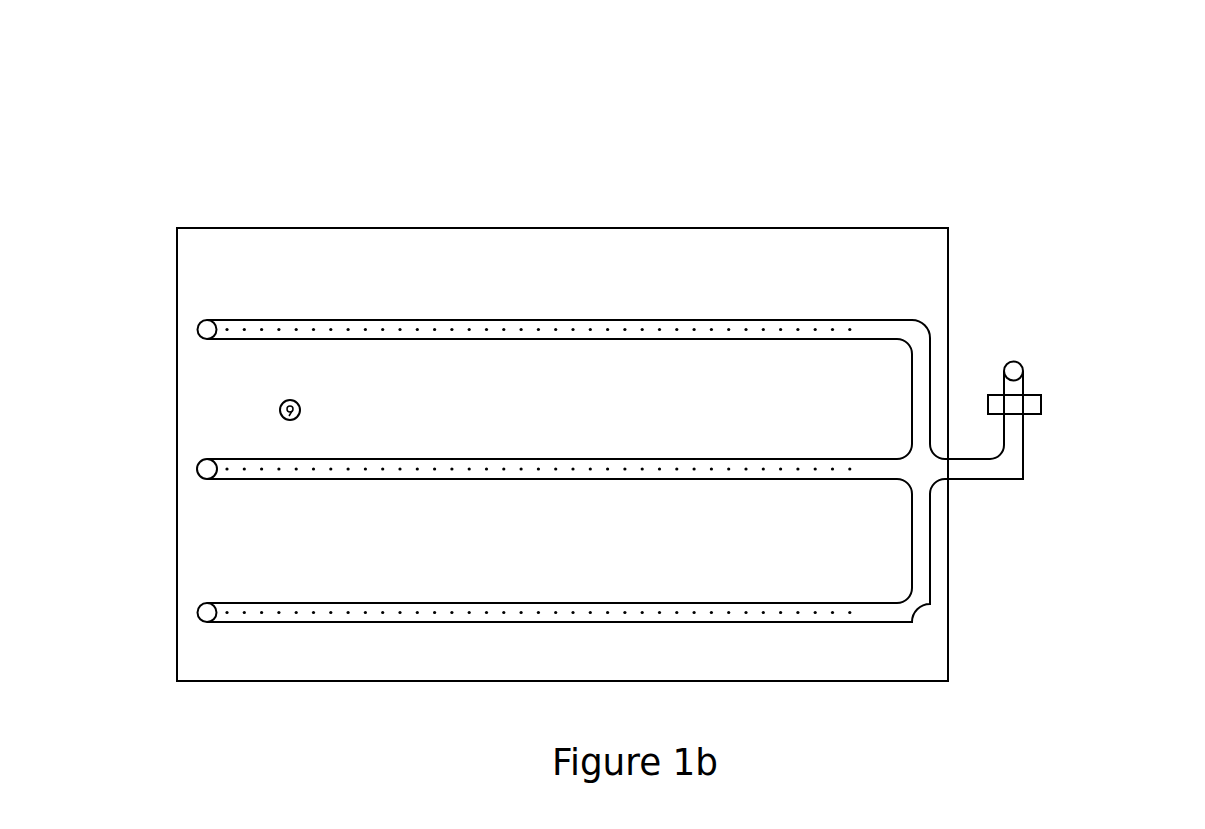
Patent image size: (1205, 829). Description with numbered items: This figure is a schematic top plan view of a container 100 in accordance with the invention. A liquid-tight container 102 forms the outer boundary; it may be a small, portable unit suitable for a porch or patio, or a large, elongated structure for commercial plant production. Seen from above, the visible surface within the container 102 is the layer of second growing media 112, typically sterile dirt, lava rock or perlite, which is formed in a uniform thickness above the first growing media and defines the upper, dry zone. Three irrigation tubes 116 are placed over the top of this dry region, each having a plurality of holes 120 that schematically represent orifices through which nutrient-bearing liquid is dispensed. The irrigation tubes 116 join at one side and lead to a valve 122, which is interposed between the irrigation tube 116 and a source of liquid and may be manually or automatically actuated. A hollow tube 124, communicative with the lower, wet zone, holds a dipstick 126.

The container 100 is at (631, 367).
The liquid-tight container 102 is at (948, 298).
The second growing media 112 is at (365, 282).
The irrigation tube 116 is at (693, 457).
The holes 120 is at (625, 330).
The valve 122 is at (1041, 408).
The hollow tube 124 is at (284, 401).
The dipstick 126 is at (282, 418).